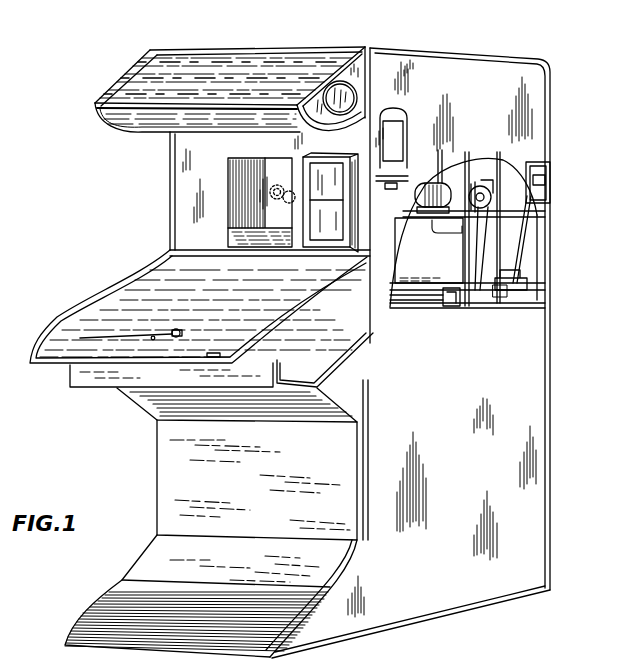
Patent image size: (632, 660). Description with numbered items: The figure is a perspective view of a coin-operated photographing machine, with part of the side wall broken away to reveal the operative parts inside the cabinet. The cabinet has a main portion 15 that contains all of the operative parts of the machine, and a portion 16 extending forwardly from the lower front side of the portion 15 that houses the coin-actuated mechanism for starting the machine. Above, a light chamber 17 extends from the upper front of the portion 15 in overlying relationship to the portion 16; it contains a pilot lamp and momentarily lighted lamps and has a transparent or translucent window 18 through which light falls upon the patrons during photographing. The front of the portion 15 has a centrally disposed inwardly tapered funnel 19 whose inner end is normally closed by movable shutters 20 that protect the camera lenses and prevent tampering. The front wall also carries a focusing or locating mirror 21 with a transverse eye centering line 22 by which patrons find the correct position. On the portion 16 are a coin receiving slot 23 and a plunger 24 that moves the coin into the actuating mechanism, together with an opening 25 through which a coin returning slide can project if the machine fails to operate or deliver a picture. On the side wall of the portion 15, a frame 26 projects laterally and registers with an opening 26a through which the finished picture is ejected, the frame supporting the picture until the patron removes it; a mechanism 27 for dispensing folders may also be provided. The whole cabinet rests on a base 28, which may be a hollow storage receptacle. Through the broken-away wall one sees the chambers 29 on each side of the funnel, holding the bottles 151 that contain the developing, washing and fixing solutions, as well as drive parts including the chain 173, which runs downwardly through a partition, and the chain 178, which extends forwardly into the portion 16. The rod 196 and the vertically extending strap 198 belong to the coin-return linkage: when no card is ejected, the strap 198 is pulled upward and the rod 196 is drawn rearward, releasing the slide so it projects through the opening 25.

The portion of the cabinet 15 is at (532, 115).
The portion of the cabinet 16 is at (325, 335).
The light chamber 17 is at (313, 54).
The window 18 is at (160, 123).
The funnel 19 is at (251, 200).
The movable shutters 20 is at (282, 183).
The focusing or locating mirror 21 is at (350, 248).
The eye centering line 22 is at (331, 205).
The coin receiving slot 23 is at (183, 328).
The plunger 24 is at (180, 337).
The opening 25 is at (212, 358).
The frame 26 is at (547, 164).
The opening 26a is at (548, 184).
The mechanism for dispensing folders 27 is at (401, 140).
The base 28 is at (510, 428).
The chambers 29 is at (455, 184).
The bottles 151 is at (423, 214).
The chain 173 is at (485, 258).
The chain 178 is at (400, 318).
The rod 196 is at (440, 308).
The strap 198 is at (517, 250).